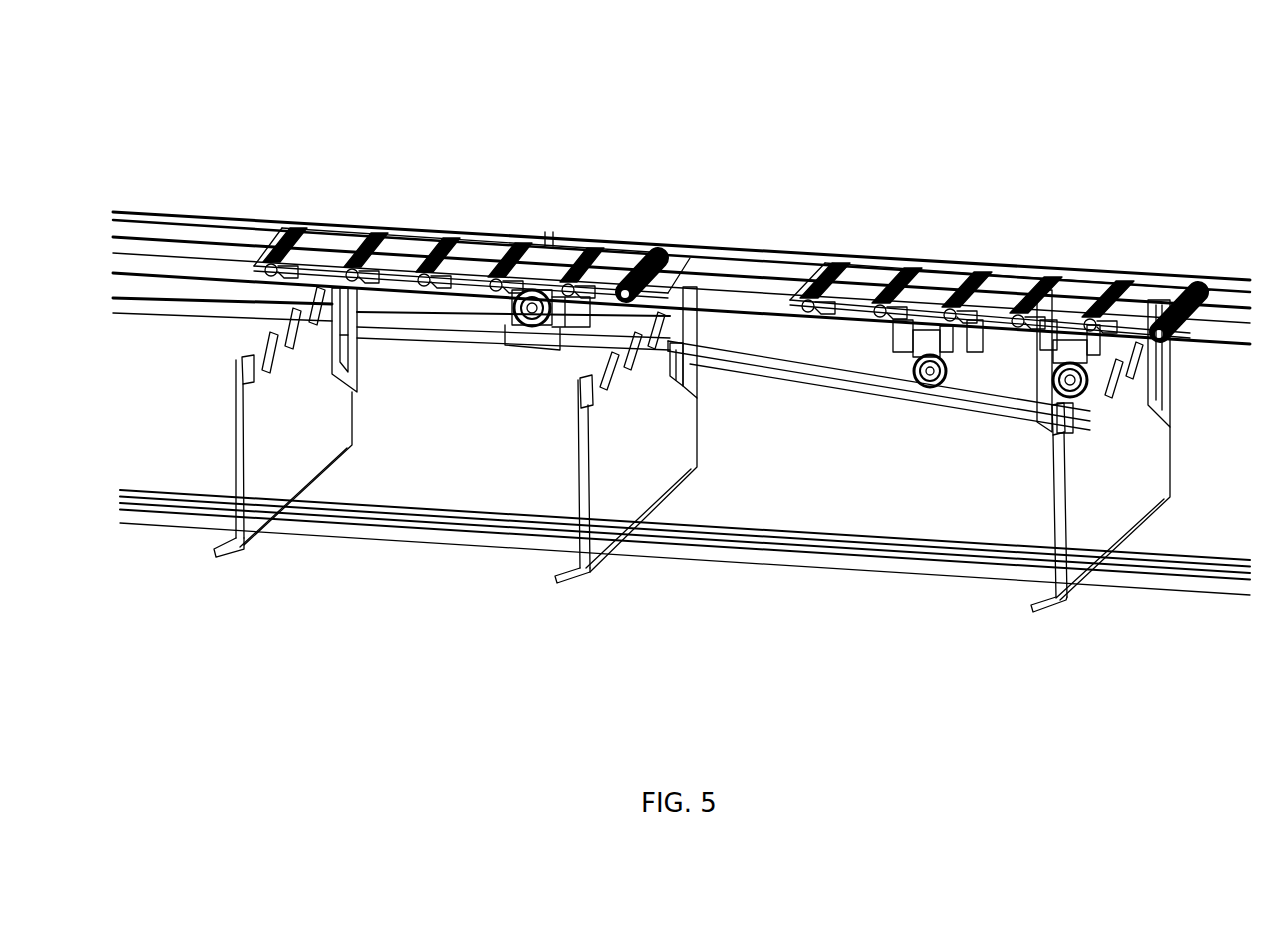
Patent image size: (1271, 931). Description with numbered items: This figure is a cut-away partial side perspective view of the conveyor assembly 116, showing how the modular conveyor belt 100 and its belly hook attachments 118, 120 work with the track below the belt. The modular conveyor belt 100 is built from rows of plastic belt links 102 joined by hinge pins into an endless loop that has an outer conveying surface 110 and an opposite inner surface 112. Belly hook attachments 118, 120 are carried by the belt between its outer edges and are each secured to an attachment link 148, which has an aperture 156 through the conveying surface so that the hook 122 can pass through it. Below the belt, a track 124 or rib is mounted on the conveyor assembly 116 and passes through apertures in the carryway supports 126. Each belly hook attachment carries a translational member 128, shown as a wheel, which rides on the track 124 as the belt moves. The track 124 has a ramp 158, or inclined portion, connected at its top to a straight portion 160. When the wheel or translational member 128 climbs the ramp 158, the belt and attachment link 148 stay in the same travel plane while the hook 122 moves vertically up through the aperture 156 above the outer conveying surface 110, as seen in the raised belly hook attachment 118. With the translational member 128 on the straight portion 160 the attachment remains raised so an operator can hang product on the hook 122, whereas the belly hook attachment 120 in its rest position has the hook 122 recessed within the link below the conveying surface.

The modular conveyor belt 100 is at (478, 240).
The belt link 102 is at (607, 237).
The outer conveying surface 110 is at (366, 228).
The inner surface 112 is at (427, 302).
The conveyor assembly 116 is at (818, 177).
The belly hook attachment 118 is at (502, 340).
The belly hook attachment 120 is at (1017, 357).
The hook 122 is at (552, 240).
The track 124 is at (760, 360).
The carryway support 126 is at (275, 443).
The translational member 128 is at (547, 335).
The attachment link 148 is at (567, 240).
The aperture 156 is at (392, 240).
The ramp 158 is at (852, 332).
The straight portion 160 is at (461, 328).